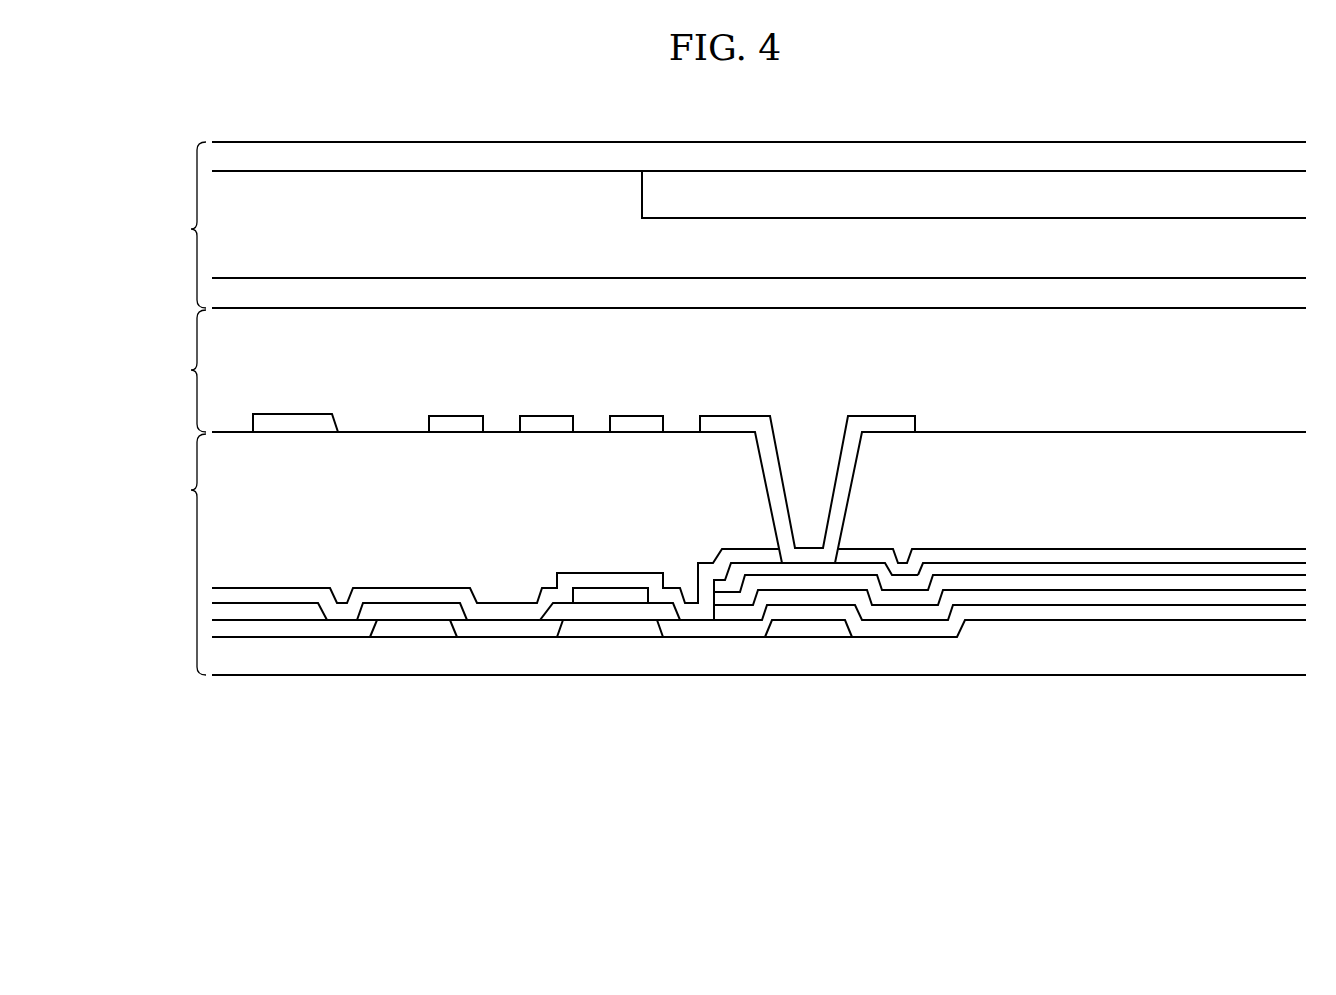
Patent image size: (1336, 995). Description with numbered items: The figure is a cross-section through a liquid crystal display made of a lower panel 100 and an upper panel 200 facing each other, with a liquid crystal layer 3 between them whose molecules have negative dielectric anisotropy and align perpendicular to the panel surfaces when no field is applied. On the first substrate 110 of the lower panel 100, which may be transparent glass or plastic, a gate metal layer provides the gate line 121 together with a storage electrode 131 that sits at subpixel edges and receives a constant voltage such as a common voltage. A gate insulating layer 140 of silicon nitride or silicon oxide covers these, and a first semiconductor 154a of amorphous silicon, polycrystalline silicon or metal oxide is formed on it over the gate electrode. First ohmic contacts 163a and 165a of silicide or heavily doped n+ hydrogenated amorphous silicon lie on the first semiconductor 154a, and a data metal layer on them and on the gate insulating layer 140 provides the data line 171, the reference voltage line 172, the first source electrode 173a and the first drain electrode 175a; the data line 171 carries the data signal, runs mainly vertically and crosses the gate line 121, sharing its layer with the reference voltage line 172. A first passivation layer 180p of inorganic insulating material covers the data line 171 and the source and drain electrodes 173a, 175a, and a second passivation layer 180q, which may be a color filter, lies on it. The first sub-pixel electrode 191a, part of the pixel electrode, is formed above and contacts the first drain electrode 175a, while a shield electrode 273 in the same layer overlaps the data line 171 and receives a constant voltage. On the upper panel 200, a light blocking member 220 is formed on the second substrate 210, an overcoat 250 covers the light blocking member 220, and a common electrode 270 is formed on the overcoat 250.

The upper panel 200 is at (176, 225).
The second substrate 210 is at (905, 157).
The light blocking member 220 is at (1052, 192).
The overcoat 250 is at (460, 192).
The common electrode 270 is at (333, 290).
The liquid crystal layer 3 is at (182, 371).
The shield electrode 273 is at (297, 425).
The lower panel 100 is at (176, 554).
The first substrate 110 is at (1207, 658).
The gate line 121 is at (1118, 628).
The storage electrode 131 is at (420, 628).
The gate insulating layer 140 is at (908, 628).
The first semiconductor 154a is at (1075, 598).
The first ohmic contact 163a is at (1135, 580).
The first ohmic contact 165a is at (1018, 583).
The data line 171 is at (285, 613).
The reference voltage line 172 is at (592, 598).
The first source electrode 173a is at (1185, 568).
The first drain electrode 175a is at (948, 570).
The first passivation layer 180p is at (1285, 558).
The second passivation layer 180q is at (1220, 447).
The first sub-pixel electrode 191a is at (888, 425).